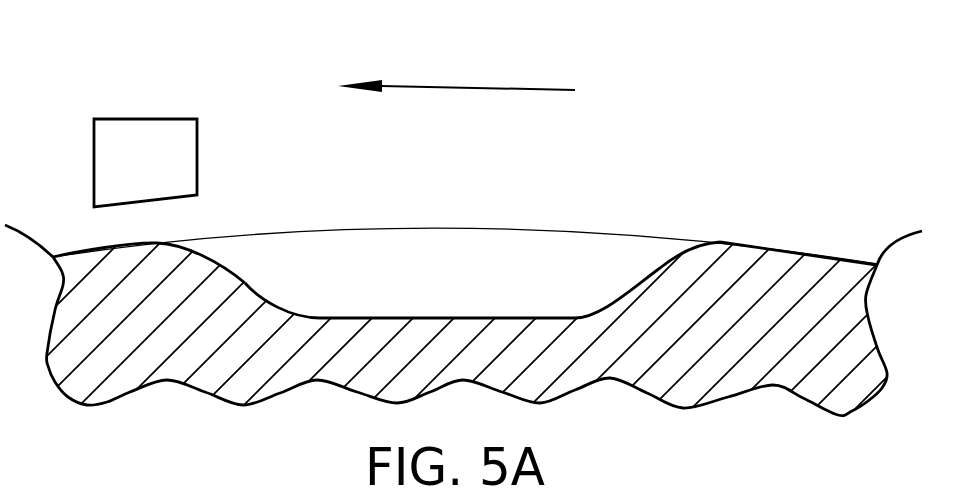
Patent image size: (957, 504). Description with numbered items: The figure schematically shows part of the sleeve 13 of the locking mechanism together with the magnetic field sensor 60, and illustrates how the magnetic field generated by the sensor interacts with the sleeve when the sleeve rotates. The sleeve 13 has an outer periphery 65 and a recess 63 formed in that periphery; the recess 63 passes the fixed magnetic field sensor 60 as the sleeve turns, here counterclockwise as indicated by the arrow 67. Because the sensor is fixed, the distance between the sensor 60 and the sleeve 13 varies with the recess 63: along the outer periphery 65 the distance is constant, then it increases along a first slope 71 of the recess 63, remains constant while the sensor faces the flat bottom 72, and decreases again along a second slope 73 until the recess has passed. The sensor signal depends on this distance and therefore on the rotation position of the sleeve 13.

The sleeve 13 is at (697, 338).
The magnetic field sensor 60 is at (145, 119).
The recess 63 is at (482, 223).
The outer periphery 65 is at (803, 228).
The direction of movement 67 is at (443, 85).
The first slope 71 is at (276, 268).
The flat bottom 72 is at (437, 317).
The second slope 73 is at (610, 270).